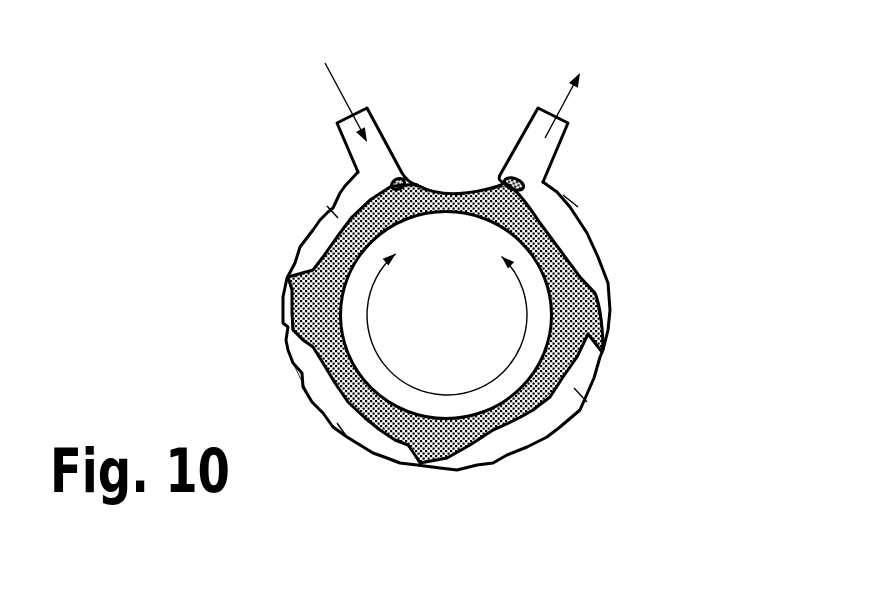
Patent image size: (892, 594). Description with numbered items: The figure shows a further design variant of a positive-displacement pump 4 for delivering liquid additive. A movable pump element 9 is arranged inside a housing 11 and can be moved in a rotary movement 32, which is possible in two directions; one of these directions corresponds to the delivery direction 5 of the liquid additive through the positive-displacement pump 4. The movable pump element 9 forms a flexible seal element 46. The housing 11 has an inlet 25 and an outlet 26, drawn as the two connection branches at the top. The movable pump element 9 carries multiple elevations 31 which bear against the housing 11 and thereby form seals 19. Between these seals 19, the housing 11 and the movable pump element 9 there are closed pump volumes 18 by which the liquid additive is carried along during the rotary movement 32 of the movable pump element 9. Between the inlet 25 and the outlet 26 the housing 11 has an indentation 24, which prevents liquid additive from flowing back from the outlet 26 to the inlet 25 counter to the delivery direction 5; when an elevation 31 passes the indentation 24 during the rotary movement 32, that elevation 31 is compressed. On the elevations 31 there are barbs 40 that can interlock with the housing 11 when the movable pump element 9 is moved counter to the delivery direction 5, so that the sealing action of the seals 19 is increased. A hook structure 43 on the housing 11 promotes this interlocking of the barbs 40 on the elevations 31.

The positive-displacement pump 4 is at (668, 184).
The delivery direction 5 is at (340, 93).
The movable pump element 9 is at (560, 423).
The housing 11 is at (598, 243).
The closed pump volumes 18 is at (332, 212).
The seals 19 is at (289, 268).
The indentation 24 is at (452, 190).
The inlet 25 is at (377, 122).
The outlet 26 is at (518, 134).
The elevations 31 is at (595, 296).
The rotary movement 32 is at (497, 382).
The barbs 40 is at (288, 284).
The hook structure 43 is at (300, 380).
The flexible seal element 46 is at (480, 447).